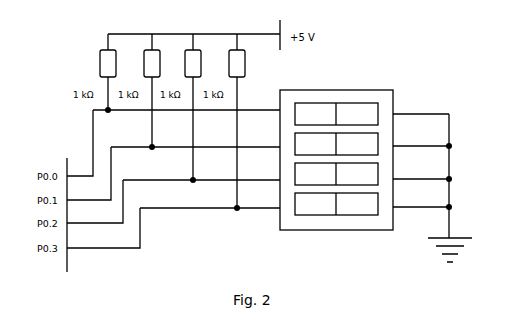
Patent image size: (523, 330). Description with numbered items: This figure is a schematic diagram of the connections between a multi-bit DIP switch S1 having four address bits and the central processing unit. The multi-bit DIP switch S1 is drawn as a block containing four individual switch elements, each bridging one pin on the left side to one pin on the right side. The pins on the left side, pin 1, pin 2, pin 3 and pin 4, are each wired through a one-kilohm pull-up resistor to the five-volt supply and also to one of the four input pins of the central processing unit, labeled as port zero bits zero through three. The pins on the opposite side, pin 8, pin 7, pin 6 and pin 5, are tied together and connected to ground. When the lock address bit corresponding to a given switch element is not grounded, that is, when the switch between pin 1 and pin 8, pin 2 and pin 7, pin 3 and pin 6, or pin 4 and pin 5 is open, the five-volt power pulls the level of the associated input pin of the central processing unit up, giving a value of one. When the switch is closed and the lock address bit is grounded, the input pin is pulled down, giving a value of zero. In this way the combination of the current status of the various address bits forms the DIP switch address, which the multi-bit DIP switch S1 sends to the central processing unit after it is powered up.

The pin 1 is at (186, 103).
The pin 2 is at (195, 140).
The pin 3 is at (201, 173).
The pin 4 is at (210, 200).
The pin 5 is at (421, 199).
The pin 6 is at (421, 173).
The pin 7 is at (421, 139).
The pin 8 is at (421, 105).
The multi-bit DIP switch S1 is at (336, 151).